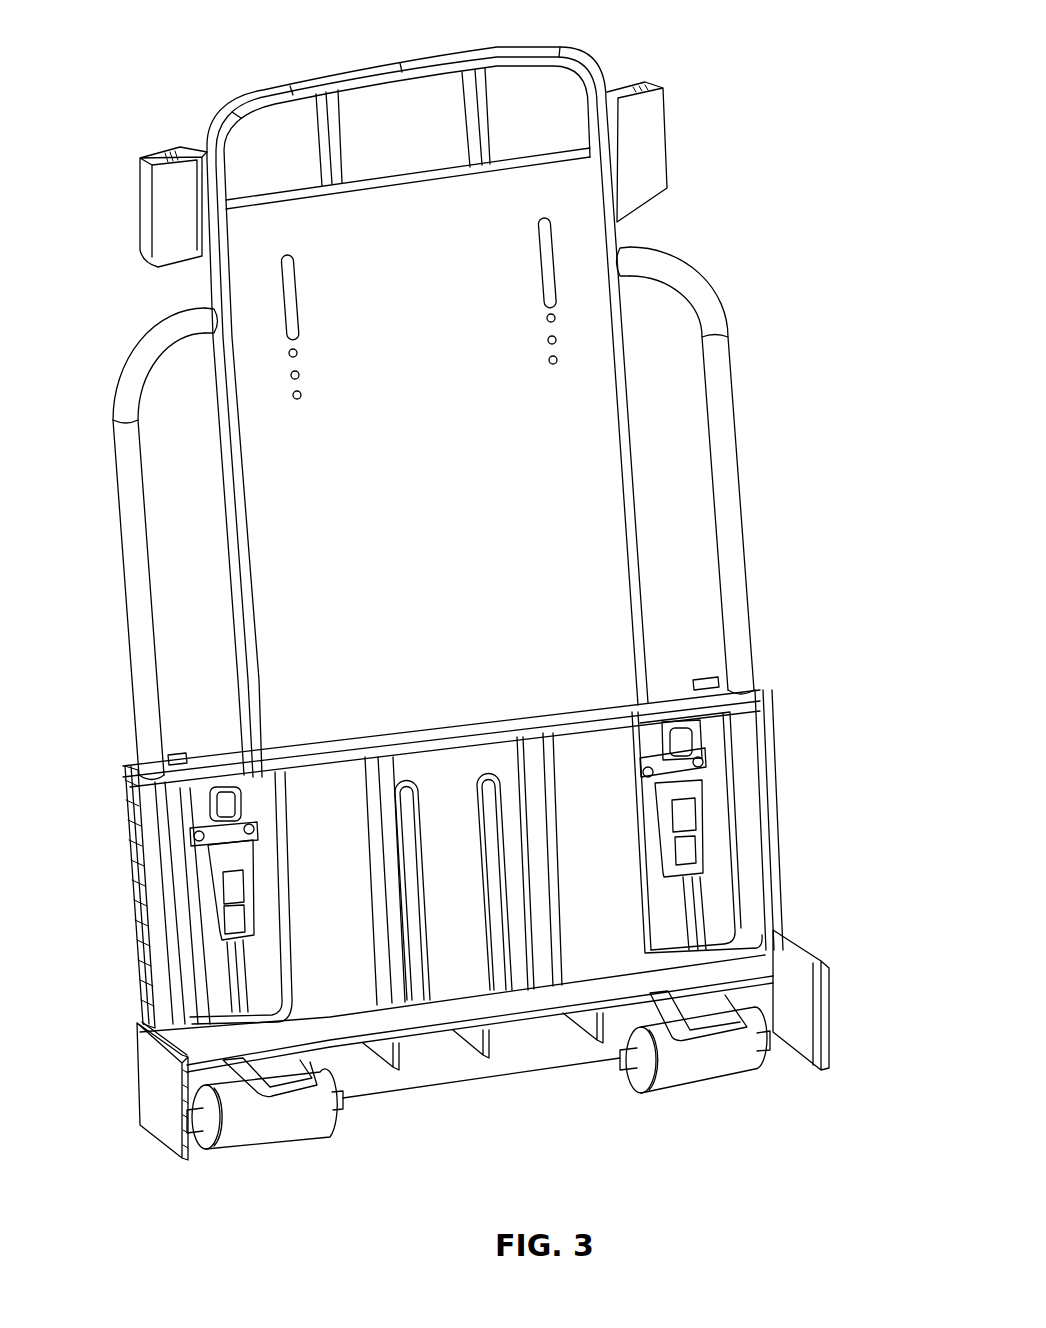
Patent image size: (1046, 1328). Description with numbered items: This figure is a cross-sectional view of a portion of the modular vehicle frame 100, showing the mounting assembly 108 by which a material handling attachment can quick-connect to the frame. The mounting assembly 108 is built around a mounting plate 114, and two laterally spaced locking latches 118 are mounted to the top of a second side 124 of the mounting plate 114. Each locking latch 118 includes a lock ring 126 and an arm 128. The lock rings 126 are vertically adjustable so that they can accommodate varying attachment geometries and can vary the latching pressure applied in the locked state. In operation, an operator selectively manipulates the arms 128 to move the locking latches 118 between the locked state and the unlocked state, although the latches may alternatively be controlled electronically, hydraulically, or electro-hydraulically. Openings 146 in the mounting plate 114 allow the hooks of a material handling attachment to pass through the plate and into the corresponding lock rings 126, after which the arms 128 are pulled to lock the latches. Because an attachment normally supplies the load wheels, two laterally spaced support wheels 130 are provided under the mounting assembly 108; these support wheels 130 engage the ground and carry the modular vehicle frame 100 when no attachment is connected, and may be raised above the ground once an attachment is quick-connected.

The modular vehicle frame 100 is at (700, 40).
The mounting assembly 108 is at (800, 775).
The mounting plate 114 is at (317, 813).
The locking latch 118 is at (202, 880).
The second side 124 is at (452, 950).
The lock ring 126 is at (207, 788).
The arm 128 is at (225, 967).
The support wheel 130 is at (277, 1128).
The opening 146 is at (180, 772).